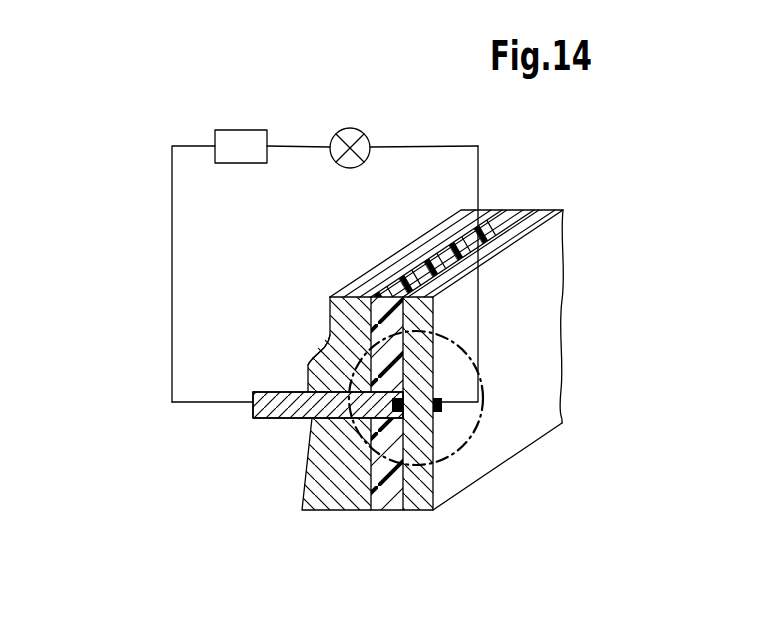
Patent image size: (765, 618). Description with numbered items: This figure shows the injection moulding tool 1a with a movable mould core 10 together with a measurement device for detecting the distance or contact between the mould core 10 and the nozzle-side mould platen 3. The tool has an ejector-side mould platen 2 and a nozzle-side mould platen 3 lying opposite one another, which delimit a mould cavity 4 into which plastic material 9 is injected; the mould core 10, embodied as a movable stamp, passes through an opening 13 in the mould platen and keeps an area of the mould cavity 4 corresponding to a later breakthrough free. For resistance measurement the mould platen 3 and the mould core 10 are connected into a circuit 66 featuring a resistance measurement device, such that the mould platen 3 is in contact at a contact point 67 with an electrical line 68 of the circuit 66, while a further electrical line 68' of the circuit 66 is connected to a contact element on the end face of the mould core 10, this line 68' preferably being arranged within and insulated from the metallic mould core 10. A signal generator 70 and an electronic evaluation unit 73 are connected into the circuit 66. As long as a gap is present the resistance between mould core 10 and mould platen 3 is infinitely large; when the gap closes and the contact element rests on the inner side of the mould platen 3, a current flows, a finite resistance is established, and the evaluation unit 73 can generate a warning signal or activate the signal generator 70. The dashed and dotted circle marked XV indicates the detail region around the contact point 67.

The injection moulding tool 1a is at (580, 367).
The ejector-side mould platen 2 is at (327, 500).
The nozzle-side mould platen 3 is at (460, 472).
The mould cavity 4 is at (395, 490).
The plastic material 9 is at (383, 488).
The mould core 10 is at (282, 418).
The opening 13 is at (323, 390).
The circuit 66 is at (160, 294).
The contact point 67 is at (442, 458).
The electrical line 68 is at (521, 279).
The electrical line 68' is at (226, 361).
The signal generator 70 is at (357, 130).
The electronic evaluation unit 73 is at (236, 137).
The detail section marker XV is at (547, 366).